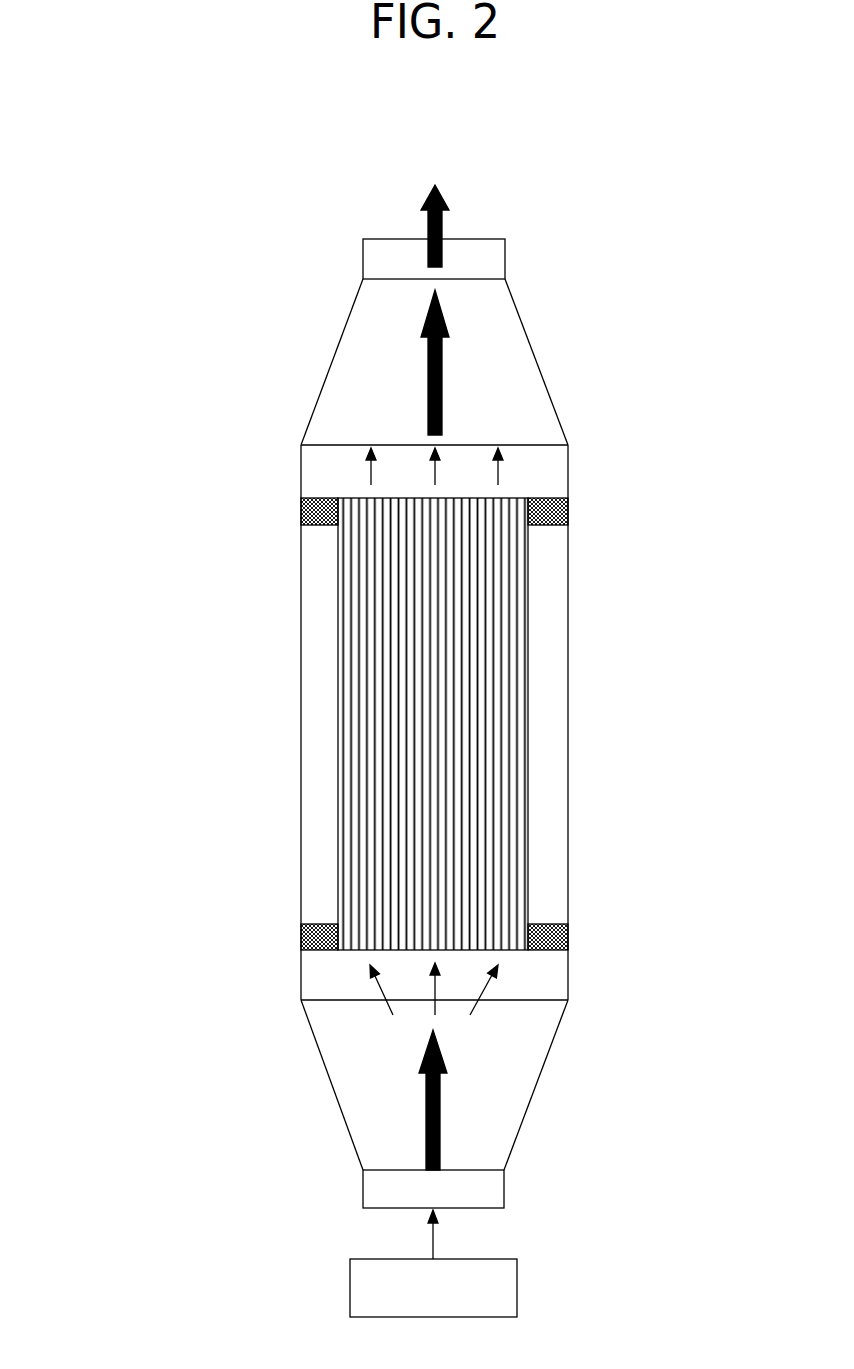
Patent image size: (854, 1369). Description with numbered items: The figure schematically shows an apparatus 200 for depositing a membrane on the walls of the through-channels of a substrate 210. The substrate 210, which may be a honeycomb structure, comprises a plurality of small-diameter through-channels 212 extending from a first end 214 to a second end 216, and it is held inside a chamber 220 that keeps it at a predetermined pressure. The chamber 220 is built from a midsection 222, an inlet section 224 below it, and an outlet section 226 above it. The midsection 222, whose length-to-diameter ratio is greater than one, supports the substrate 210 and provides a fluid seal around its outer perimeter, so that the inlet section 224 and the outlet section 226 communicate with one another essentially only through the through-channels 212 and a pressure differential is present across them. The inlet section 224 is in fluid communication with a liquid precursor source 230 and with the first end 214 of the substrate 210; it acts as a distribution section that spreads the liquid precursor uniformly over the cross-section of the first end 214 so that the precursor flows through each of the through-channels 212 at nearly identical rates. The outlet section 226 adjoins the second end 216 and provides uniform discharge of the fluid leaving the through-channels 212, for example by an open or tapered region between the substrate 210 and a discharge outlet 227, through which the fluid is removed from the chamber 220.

The apparatus 200 is at (460, 145).
The chamber 220 is at (195, 213).
The discharge outlet 227 is at (473, 267).
The outlet section 226 is at (330, 473).
The second end 216 is at (500, 497).
The midsection 222 is at (573, 745).
The substrate 210 is at (537, 628).
The through-channels 212 is at (503, 757).
The first end 214 is at (500, 950).
The inlet section 224 is at (377, 1132).
The liquid precursor source 230 is at (433, 1263).